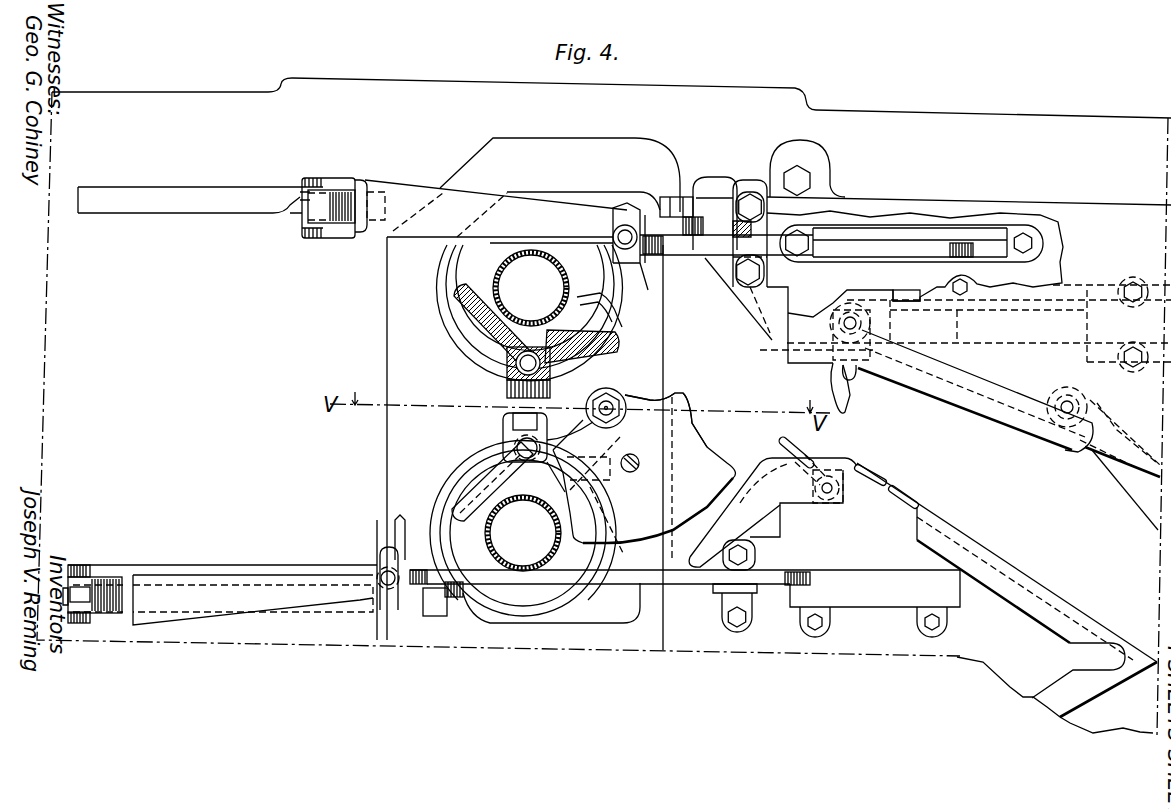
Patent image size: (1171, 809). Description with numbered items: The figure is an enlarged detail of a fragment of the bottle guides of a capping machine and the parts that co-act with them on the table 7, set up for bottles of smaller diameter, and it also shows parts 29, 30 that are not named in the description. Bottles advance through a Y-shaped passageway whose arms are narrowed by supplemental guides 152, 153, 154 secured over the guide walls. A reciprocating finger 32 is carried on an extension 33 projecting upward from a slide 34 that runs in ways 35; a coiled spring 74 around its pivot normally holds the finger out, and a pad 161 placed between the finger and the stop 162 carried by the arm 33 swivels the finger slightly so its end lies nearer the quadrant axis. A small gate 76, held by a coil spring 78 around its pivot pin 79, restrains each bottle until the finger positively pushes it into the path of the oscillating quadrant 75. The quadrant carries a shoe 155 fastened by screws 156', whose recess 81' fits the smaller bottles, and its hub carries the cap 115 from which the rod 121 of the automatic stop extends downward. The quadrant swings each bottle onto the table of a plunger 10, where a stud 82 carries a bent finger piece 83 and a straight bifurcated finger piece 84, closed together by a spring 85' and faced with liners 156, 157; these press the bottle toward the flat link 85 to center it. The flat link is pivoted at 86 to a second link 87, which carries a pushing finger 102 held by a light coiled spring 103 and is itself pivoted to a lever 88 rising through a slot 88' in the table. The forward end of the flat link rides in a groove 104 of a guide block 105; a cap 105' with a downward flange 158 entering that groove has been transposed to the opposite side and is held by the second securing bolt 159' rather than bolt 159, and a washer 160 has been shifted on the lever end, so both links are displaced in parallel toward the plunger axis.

The table 7 is at (604, 406).
The plungers 10 is at (477, 271).
The pivot stud 29 is at (1068, 407).
The bracket 30 is at (1103, 405).
The finger 32 is at (850, 402).
The extension 33 is at (887, 277).
The slide 34 is at (913, 273).
The ways 35 is at (1093, 283).
The coiled spring 74 is at (840, 330).
The quadrant 75 is at (647, 400).
The gate 76 is at (780, 440).
The coil spring 78 is at (833, 477).
The pivot pin 79 is at (827, 495).
The recesses 81' is at (717, 409).
The stud 82 is at (523, 440).
The finger piece 83 is at (610, 350).
The finger piece 84 is at (473, 313).
The flat link 85 is at (708, 403).
The spring 85' is at (487, 439).
The pivot 86 is at (734, 213).
The link 87 is at (508, 217).
The lever 88 is at (211, 392).
The slot 88' is at (181, 422).
The pushing finger 102 is at (637, 263).
The coiled springs 103 is at (613, 232).
The groove 104 is at (765, 253).
The guide block 105 is at (721, 412).
The cap 105' is at (755, 397).
The cap 115 is at (613, 428).
The rod 121 is at (605, 405).
The supplemental guide 152 is at (977, 407).
The supplemental guide 153 is at (997, 560).
The supplemental guide 154 is at (757, 490).
The shoe 155 is at (630, 493).
The liner 156 is at (622, 408).
The screws 156' is at (657, 465).
The liner 157 is at (492, 270).
The flange 158 is at (732, 228).
The securing bolt 159 is at (776, 205).
The securing bolt 159' is at (738, 299).
The washer 160 is at (300, 215).
The pad 161 is at (850, 375).
The stop 162 is at (868, 352).